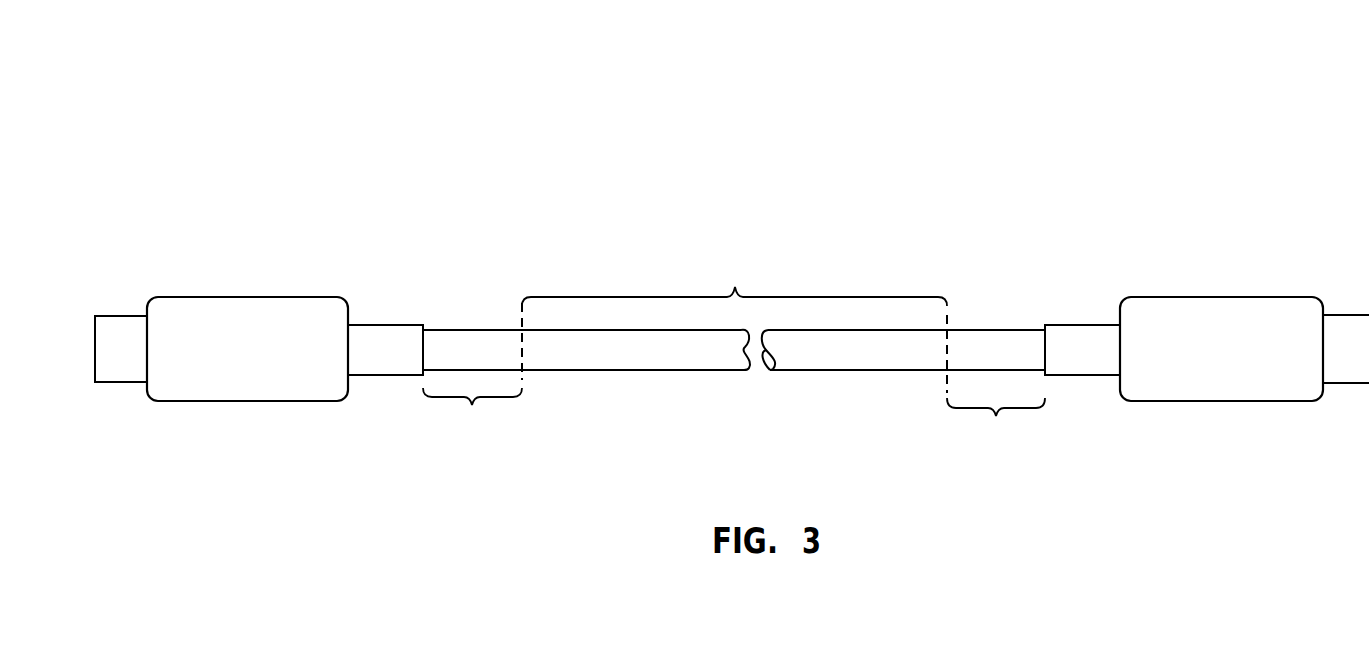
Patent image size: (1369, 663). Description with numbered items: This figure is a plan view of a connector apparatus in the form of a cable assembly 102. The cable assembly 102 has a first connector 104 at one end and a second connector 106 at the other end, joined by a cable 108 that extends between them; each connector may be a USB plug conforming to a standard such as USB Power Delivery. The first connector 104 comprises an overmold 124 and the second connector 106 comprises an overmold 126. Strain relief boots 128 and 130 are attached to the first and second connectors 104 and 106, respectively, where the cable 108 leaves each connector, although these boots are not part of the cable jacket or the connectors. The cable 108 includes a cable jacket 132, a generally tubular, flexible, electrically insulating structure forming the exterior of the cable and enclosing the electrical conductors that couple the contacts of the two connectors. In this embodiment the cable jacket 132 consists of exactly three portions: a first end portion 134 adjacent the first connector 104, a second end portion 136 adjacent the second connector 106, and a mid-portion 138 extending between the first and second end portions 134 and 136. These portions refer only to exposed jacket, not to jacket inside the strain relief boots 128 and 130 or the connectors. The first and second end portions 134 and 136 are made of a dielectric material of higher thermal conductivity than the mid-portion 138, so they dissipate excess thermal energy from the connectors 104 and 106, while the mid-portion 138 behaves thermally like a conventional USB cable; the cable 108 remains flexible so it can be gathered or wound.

The cable assembly 102 is at (358, 122).
The first connector 104 is at (221, 367).
The second connector 106 is at (1244, 369).
The cable 108 is at (772, 400).
The overmold 124 is at (257, 297).
The overmold 126 is at (1221, 297).
The strain relief boot 128 is at (383, 325).
The strain relief boot 130 is at (1083, 325).
The cable jacket 132 is at (695, 370).
The first end portion 134 is at (472, 371).
The second end portion 136 is at (996, 383).
The mid-portion 138 is at (734, 280).